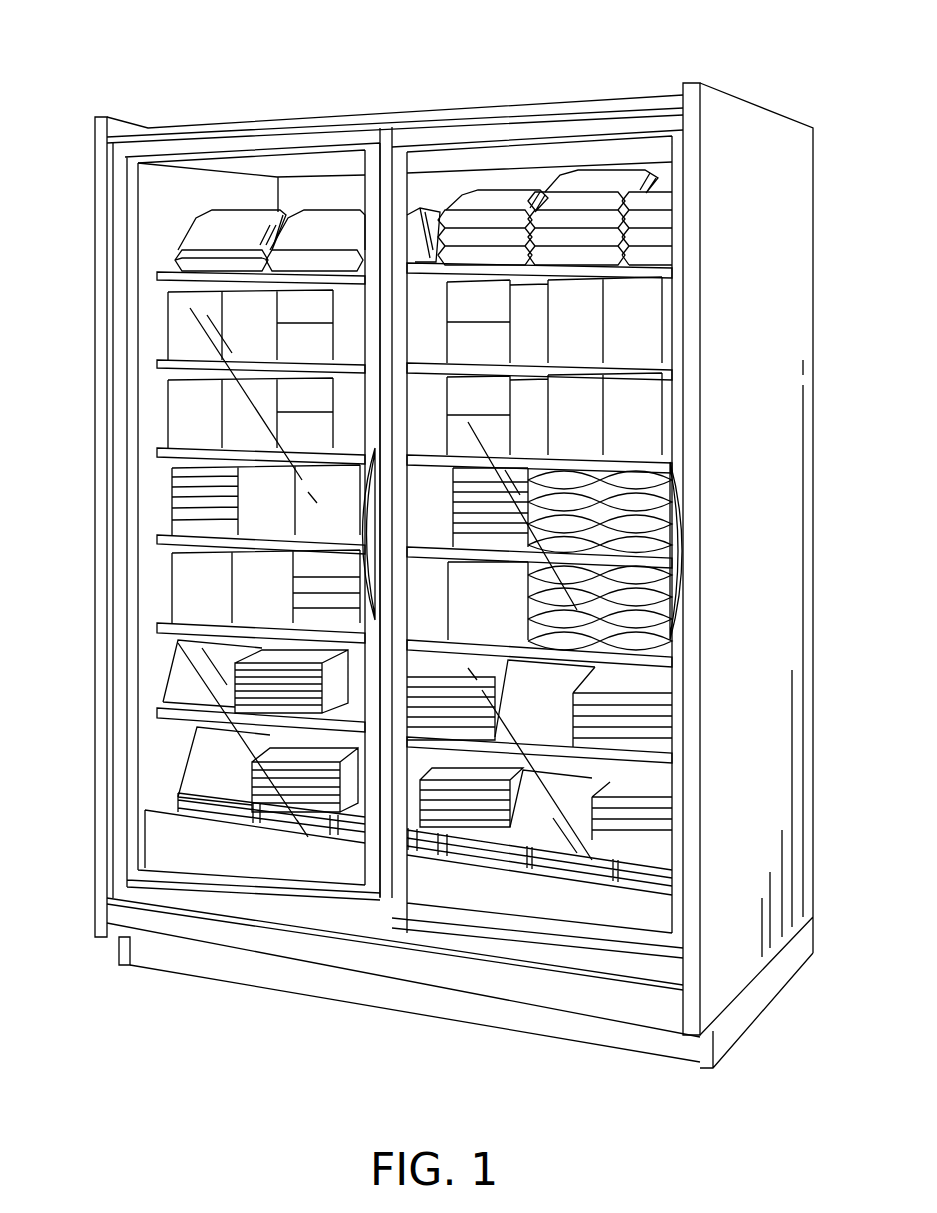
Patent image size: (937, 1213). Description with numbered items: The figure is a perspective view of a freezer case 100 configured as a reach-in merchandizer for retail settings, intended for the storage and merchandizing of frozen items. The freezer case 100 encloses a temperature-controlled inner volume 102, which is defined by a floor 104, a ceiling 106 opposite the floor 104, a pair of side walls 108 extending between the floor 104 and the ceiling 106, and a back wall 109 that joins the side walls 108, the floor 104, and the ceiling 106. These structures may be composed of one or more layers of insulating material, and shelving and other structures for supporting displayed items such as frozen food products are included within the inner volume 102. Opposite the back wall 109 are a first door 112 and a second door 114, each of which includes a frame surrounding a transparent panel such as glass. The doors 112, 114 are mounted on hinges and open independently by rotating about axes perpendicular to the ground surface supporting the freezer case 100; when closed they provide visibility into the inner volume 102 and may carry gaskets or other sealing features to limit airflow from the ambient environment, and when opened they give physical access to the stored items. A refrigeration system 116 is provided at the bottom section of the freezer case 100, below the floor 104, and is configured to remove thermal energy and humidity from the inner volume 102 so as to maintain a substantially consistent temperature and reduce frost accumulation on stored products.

The freezer case 100 is at (178, 48).
The temperature-controlled inner volume 102 is at (155, 503).
The floor 104 is at (632, 880).
The ceiling 106 is at (630, 93).
The side walls 108 is at (773, 308).
The back wall 109 is at (810, 729).
The first door 112 is at (318, 162).
The second door 114 is at (525, 150).
The refrigeration system 116 is at (74, 908).